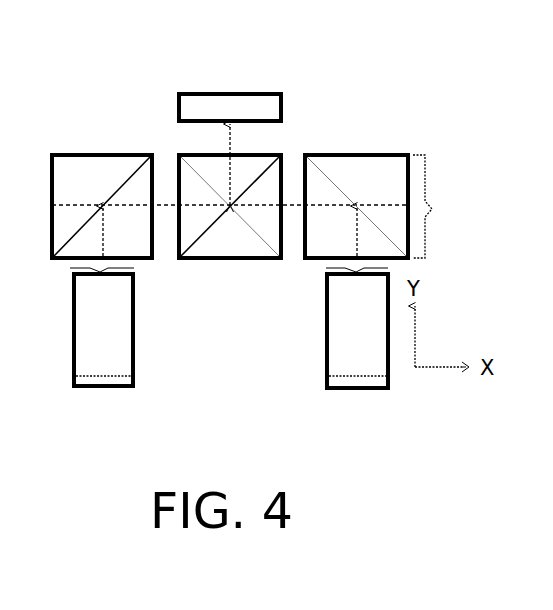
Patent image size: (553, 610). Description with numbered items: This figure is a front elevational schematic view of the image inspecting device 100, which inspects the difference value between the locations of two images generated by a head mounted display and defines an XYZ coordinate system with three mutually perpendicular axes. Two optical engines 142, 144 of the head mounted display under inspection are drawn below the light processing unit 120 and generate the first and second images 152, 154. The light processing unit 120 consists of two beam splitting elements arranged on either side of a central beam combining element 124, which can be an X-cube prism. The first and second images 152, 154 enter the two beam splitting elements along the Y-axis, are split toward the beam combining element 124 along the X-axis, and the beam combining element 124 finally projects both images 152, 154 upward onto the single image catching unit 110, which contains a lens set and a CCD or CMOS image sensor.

The image inspecting device 100 is at (188, 76).
The image catching unit 110 is at (286, 105).
The light processing unit 120 is at (267, 206).
The beam combining element 124 is at (203, 176).
The optical engine 142 is at (103, 385).
The optical engine 144 is at (358, 385).
The first image 152 is at (100, 271).
The second image 154 is at (356, 271).